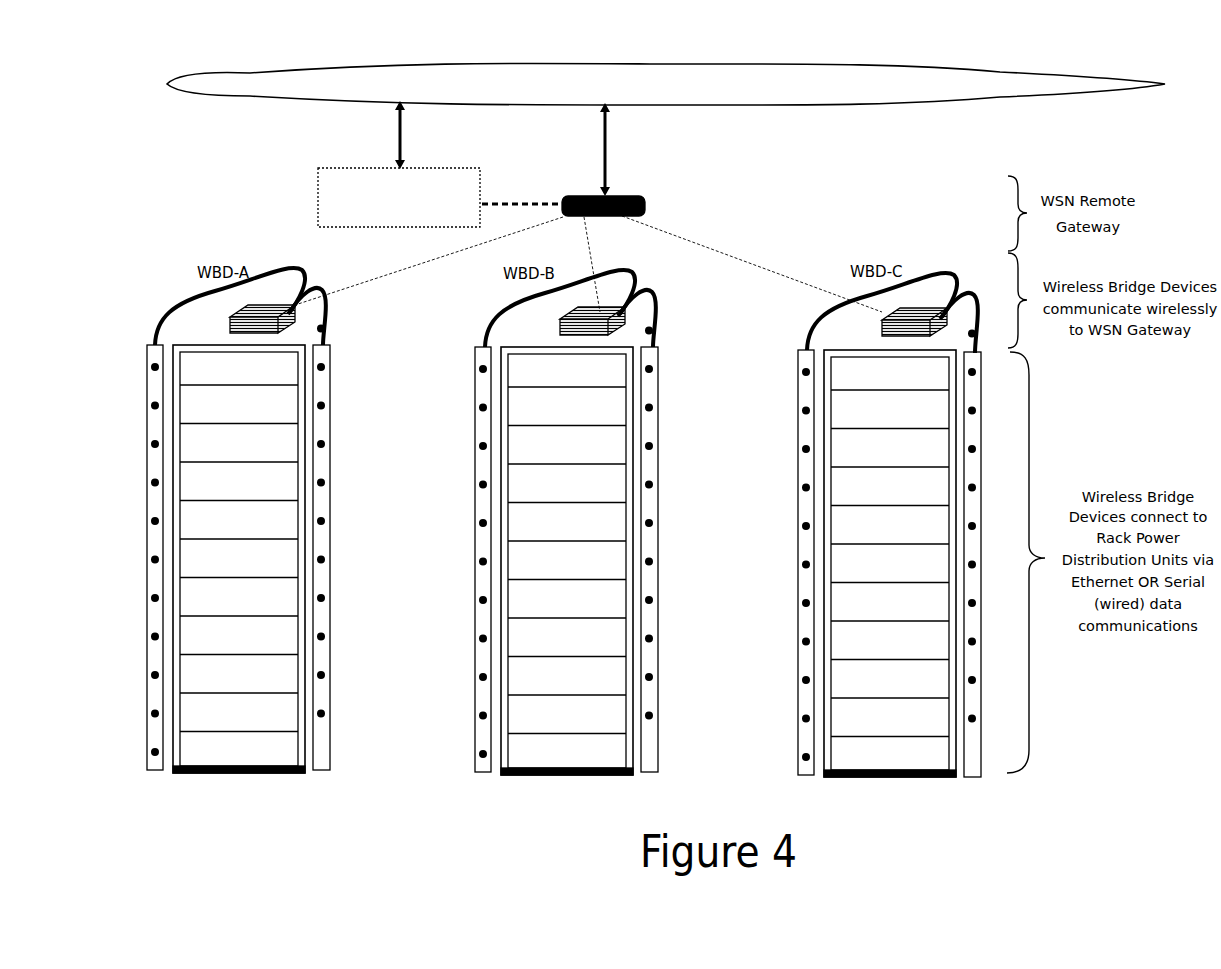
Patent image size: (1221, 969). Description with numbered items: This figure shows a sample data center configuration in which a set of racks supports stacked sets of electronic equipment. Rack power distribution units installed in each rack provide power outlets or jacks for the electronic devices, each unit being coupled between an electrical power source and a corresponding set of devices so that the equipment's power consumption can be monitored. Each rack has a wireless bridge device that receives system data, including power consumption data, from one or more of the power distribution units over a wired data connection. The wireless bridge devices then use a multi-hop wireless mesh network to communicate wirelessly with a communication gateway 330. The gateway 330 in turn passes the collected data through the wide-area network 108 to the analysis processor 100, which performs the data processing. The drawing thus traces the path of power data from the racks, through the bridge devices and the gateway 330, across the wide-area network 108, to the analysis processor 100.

The wide-area network 108 is at (258, 94).
The analysis processor 100 is at (380, 168).
The gateway 330 is at (583, 196).